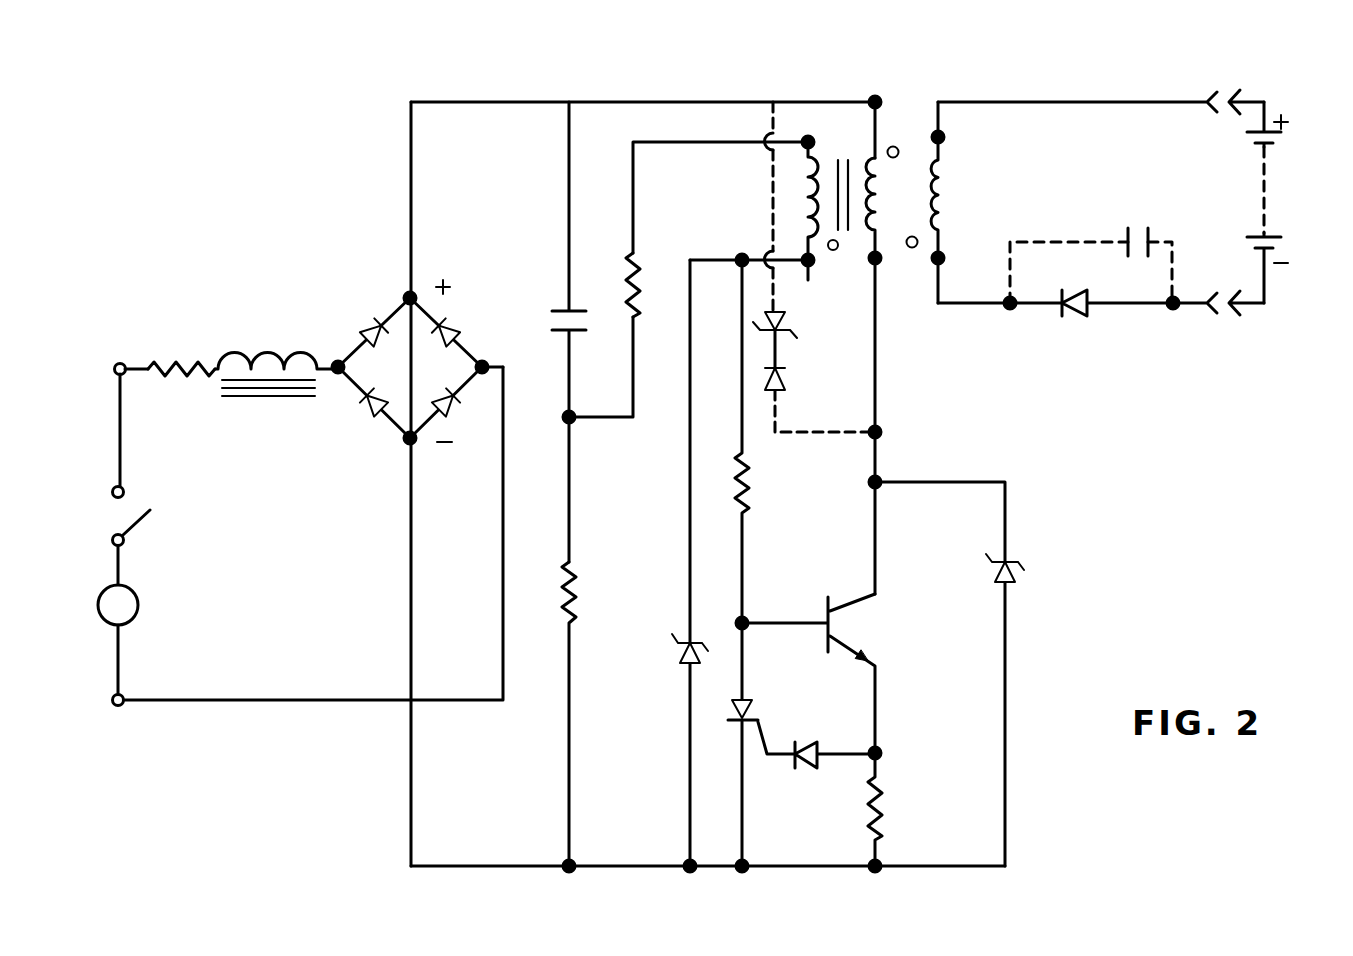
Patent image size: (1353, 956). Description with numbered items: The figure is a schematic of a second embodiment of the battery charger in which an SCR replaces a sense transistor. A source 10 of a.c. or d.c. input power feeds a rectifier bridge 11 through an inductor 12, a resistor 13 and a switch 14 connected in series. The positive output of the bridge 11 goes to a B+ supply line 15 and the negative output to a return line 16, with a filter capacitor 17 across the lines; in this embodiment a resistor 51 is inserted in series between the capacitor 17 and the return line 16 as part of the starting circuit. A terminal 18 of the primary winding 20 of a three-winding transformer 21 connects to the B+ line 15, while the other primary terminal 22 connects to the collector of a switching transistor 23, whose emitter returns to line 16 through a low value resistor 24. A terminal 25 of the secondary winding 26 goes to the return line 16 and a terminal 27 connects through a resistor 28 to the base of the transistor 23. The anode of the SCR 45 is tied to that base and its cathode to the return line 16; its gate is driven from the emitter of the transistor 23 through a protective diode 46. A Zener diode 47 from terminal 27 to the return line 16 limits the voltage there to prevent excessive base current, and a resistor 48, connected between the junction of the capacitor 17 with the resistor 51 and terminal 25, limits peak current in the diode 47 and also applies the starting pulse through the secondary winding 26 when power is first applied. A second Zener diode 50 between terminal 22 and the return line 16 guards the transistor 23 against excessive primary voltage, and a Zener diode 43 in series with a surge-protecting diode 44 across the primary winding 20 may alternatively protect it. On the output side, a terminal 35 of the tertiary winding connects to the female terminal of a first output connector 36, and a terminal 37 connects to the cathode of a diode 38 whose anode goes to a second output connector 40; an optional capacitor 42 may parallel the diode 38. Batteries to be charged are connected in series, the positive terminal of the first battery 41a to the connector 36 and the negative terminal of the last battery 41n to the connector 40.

The source 10 is at (95, 607).
The rectifier bridge 11 is at (362, 283).
The inductor 12 is at (268, 350).
The resistor 13 is at (175, 357).
The switch 14 is at (128, 523).
The B+ supply line 15 is at (458, 102).
The return line 16 is at (473, 866).
The filter capacitor 17 is at (582, 325).
The terminal 18 is at (878, 98).
The primary winding 20 is at (870, 220).
The three-winding transformer 21 is at (848, 84).
The terminal 22 is at (878, 263).
The switching transistor 23 is at (862, 617).
The low value resistor 24 is at (887, 802).
The terminal 25 is at (810, 140).
The secondary winding 26 is at (813, 213).
The terminal 27 is at (754, 282).
The resistor 28 is at (747, 495).
The terminal 35 is at (942, 135).
The first output connector 36 is at (1212, 95).
The terminal 37 is at (943, 258).
The diode 38 is at (1072, 317).
The second output connector 40 is at (1222, 307).
The first battery 41a is at (1273, 142).
The last battery 41n is at (1273, 243).
The capacitor 42 is at (1140, 233).
The Zener diode 43 is at (787, 325).
The surge-protecting diode 44 is at (785, 372).
The SCR 45 is at (723, 717).
The protective diode 46 is at (813, 743).
The Zener diode 47 is at (677, 647).
The resistor 48 is at (640, 303).
The second Zener diode 50 is at (1018, 580).
The resistor 51 is at (577, 590).